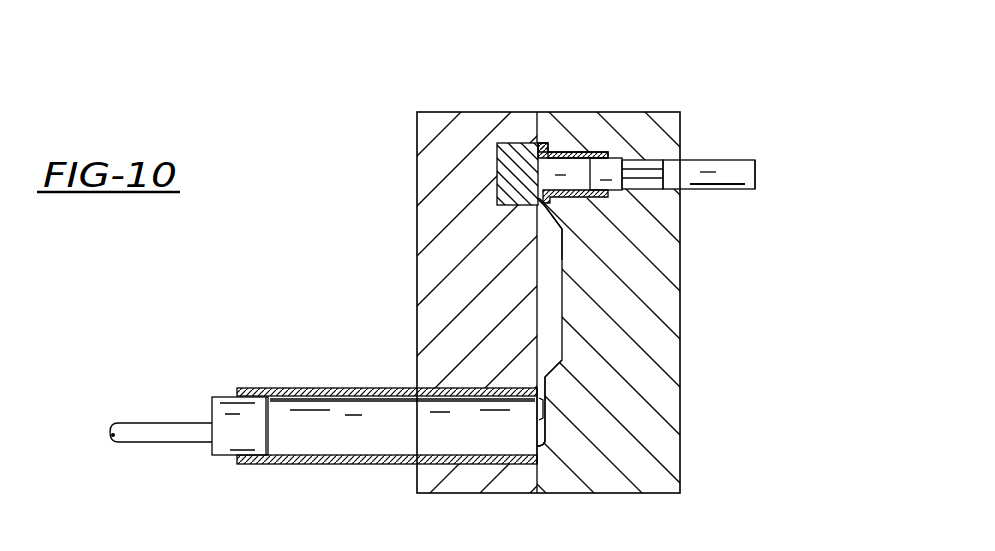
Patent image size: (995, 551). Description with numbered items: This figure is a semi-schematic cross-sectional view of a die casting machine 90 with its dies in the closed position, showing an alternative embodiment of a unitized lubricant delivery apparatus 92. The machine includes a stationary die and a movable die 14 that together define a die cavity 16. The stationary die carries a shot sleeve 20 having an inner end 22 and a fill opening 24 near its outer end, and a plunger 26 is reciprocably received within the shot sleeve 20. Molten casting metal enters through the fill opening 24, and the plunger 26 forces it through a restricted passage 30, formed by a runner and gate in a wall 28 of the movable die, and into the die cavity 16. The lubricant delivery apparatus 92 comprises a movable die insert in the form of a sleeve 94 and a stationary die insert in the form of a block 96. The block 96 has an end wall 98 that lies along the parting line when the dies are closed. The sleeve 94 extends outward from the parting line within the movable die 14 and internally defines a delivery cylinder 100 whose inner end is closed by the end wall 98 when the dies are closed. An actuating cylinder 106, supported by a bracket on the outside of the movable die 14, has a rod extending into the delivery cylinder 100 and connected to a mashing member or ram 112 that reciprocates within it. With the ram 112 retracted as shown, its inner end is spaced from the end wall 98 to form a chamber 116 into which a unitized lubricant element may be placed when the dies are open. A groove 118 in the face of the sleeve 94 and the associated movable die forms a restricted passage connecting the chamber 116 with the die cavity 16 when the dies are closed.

The movable die 14 is at (417, 247).
The die cavity 16 is at (560, 287).
The shot sleeve 20 is at (338, 465).
The inner end 22 is at (537, 432).
The fill opening 24 is at (304, 388).
The plunger 26 is at (232, 433).
The wall 28 is at (537, 446).
The restricted passage 30 is at (547, 394).
The die casting machine 90 is at (697, 98).
The unitized lubricant delivery apparatus 92 is at (726, 177).
The sleeve 94 is at (590, 153).
The block 96 is at (497, 178).
The end wall 98 is at (533, 155).
The delivery cylinder 100 is at (560, 153).
The actuating cylinder 106 is at (722, 190).
The ram 112 is at (619, 153).
The chamber 116 is at (572, 153).
The groove 118 is at (538, 212).